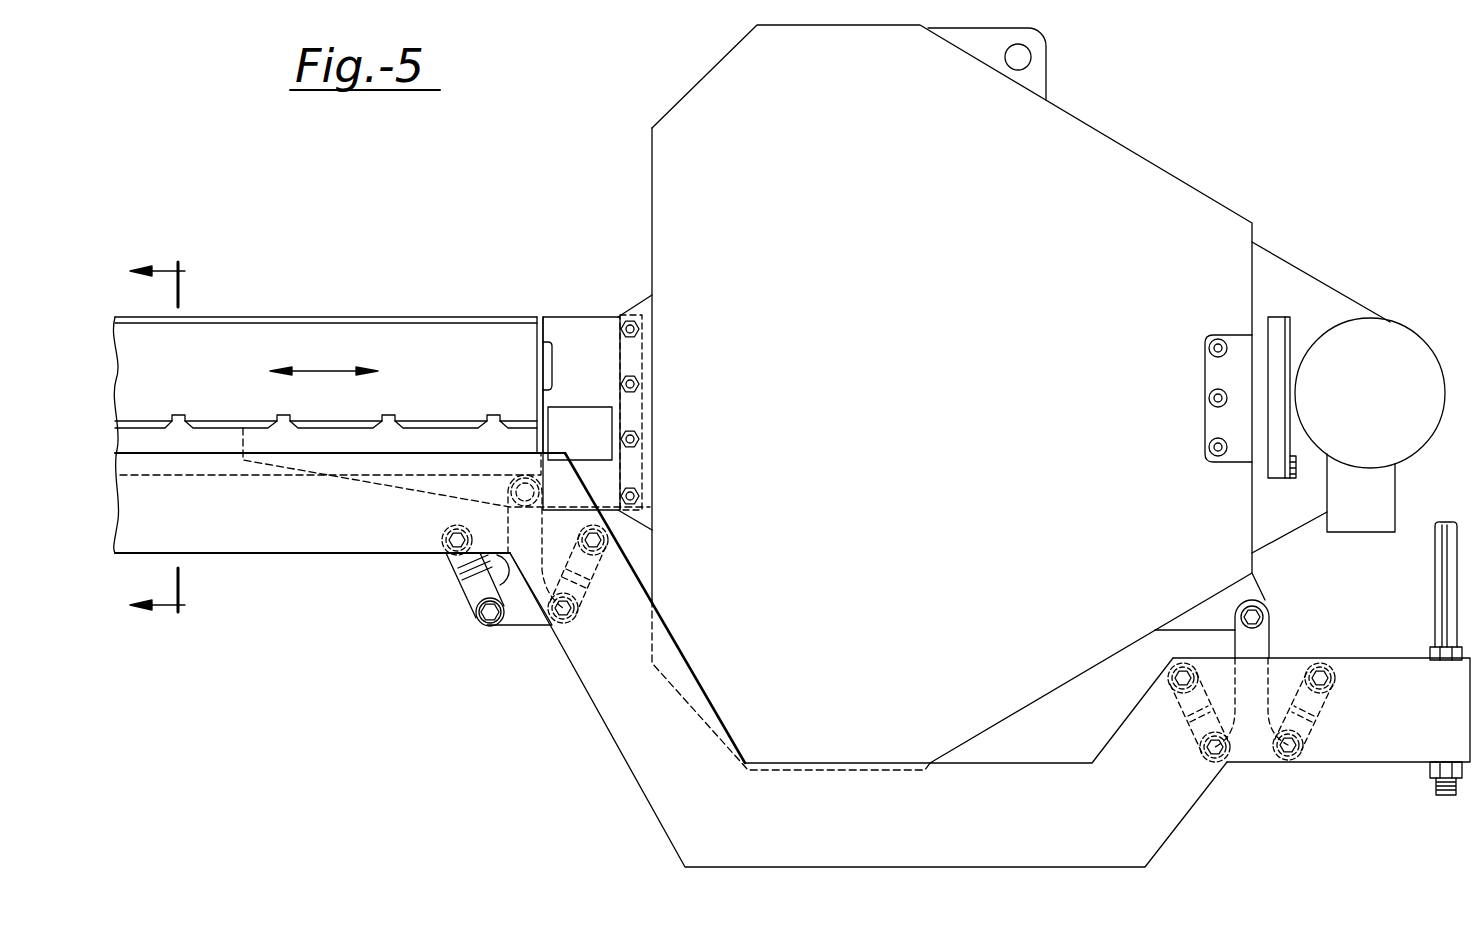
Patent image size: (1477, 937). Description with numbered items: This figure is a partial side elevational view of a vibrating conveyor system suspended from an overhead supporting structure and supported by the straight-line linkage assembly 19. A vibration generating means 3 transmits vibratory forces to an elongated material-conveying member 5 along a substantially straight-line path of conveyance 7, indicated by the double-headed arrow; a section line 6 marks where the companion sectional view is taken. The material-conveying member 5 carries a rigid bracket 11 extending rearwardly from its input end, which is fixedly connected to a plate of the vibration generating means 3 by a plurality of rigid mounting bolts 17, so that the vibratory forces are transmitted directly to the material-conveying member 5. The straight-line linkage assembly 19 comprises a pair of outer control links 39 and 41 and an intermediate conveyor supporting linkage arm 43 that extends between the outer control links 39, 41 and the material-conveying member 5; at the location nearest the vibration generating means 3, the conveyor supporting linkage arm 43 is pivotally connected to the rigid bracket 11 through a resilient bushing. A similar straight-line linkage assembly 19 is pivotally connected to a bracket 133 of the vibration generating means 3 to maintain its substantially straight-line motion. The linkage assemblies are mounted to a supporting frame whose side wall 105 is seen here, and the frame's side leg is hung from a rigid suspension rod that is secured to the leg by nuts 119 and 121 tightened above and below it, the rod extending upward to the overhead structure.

The vibration generating means 3 is at (944, 349).
The material-conveying member 5 is at (222, 330).
The section line 6- 6 is at (147, 438).
The path of conveyance 7 is at (318, 371).
The rigid bracket 11 is at (557, 322).
The rigid mounting bolts 17 is at (618, 328).
The straight-line linkage assembly 19 is at (470, 633).
The outer control link 39 is at (462, 590).
The outer control link 41 is at (597, 573).
The conveyor supporting linkage arm 43 is at (517, 615).
The side wall 105 is at (915, 850).
The nut 119 is at (1428, 656).
The nut 121 is at (1430, 768).
The bracket 133 is at (1258, 590).